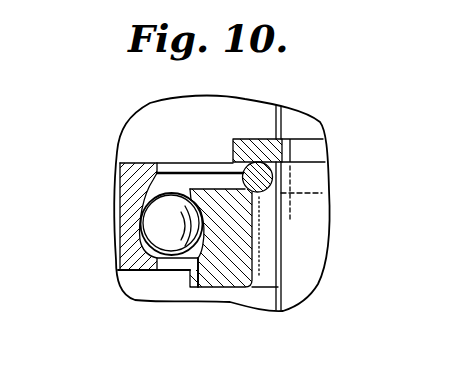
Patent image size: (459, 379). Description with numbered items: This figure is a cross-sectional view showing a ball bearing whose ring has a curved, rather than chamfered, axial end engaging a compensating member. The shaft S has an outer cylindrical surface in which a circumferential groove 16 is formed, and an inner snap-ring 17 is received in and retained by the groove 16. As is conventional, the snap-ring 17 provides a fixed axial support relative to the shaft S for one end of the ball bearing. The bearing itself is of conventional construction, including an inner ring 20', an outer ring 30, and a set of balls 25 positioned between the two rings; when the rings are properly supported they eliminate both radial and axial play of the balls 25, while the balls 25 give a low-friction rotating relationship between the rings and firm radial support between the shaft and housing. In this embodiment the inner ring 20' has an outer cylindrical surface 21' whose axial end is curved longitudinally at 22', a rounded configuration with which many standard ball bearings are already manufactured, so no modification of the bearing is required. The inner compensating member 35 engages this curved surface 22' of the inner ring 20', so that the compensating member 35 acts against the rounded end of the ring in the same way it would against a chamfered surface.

The circumferential groove 16 is at (320, 148).
The inner snap-ring 17 is at (258, 145).
The inner ring 20' is at (221, 319).
The outer cylindrical surface 21' is at (282, 234).
The curved surface 22' is at (315, 175).
The balls 25 is at (177, 200).
The outer ring 30 is at (130, 234).
The inner compensating member 35 is at (237, 163).
The shaft S is at (297, 290).